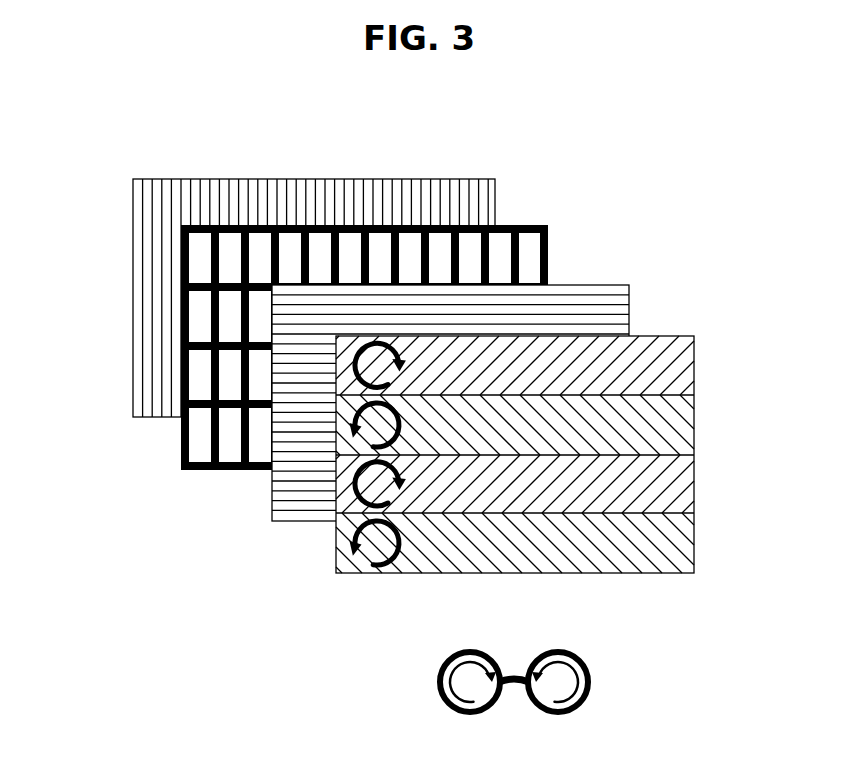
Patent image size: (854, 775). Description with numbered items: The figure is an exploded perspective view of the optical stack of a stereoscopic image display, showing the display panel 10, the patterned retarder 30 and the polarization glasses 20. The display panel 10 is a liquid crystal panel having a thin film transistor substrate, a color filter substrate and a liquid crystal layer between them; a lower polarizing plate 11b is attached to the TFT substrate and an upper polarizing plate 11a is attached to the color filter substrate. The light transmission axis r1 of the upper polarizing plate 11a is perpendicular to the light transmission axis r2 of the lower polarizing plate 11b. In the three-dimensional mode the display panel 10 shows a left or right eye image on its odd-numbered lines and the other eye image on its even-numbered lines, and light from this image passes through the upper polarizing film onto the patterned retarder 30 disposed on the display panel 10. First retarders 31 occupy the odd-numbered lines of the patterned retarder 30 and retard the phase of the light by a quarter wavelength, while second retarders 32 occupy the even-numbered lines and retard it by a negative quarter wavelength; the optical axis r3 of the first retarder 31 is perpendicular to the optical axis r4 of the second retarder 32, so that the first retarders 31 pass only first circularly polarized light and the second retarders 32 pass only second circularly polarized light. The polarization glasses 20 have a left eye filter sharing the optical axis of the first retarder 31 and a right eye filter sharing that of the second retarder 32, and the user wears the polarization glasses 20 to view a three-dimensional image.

The display panel 10 is at (534, 224).
The upper polarizing plate 11a is at (592, 284).
The lower polarizing plate 11b is at (476, 178).
The polarization glasses 20 is at (592, 680).
The patterned retarder 30 is at (553, 427).
The first retarder 31 is at (690, 363).
The second retarder 32 is at (690, 421).
The light transmission axis of the upper polarizing plate r1 is at (284, 506).
The light transmission axis of the lower polarizing plate r2 is at (150, 378).
The optical axis of the first retarder r3 is at (341, 535).
The optical axis of the second retarder r4 is at (417, 561).